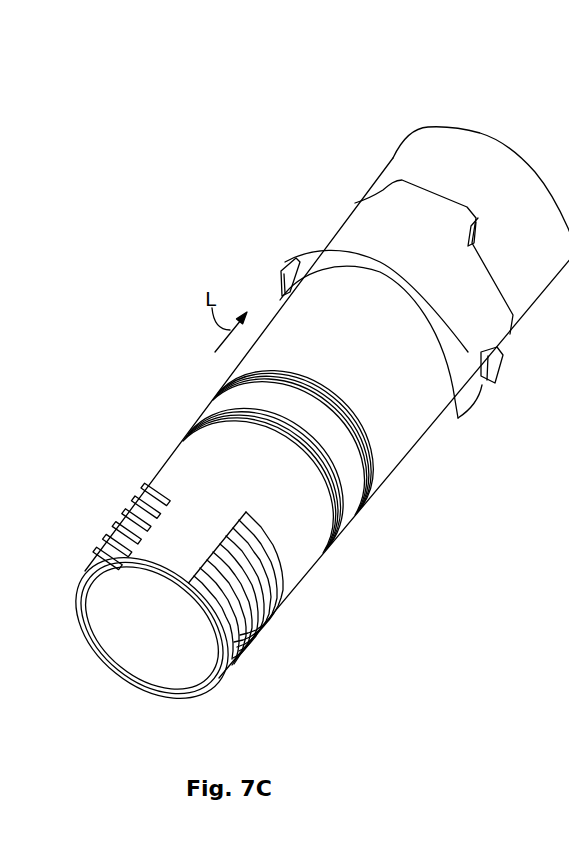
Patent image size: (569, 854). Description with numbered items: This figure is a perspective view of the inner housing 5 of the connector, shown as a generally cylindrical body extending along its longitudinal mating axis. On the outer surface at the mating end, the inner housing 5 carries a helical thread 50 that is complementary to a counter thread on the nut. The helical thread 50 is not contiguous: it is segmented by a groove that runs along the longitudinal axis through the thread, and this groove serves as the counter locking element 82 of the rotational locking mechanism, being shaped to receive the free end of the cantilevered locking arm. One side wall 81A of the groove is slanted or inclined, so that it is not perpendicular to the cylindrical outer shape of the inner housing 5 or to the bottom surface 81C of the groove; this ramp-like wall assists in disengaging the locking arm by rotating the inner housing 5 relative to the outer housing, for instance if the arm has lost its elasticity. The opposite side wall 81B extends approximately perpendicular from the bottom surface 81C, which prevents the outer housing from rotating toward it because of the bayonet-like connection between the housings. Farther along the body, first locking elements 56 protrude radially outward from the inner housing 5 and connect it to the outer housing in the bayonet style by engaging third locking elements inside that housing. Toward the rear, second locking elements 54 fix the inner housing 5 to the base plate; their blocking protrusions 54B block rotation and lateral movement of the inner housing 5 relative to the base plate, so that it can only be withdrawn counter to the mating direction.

The inner housing 5 is at (373, 361).
The helical thread 50 is at (255, 622).
The second locking elements 54 is at (422, 207).
The blocking protrusions 54B is at (434, 220).
The first locking elements 56 is at (287, 264).
The side wall 81A is at (175, 483).
The side wall 81B is at (289, 570).
The bottom surface 81C is at (192, 557).
The counter locking element 82 is at (212, 513).